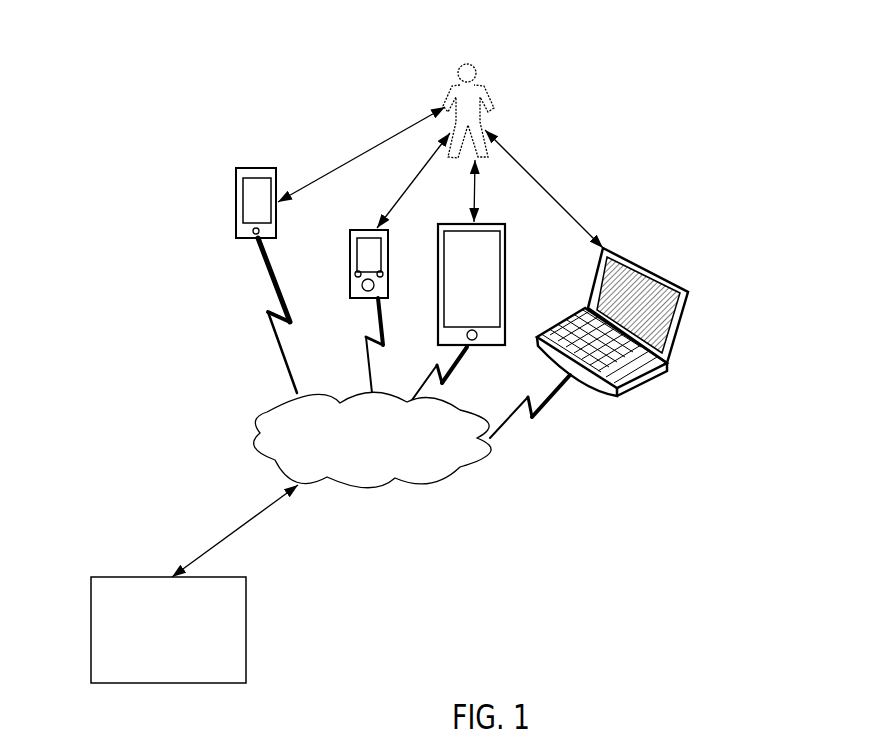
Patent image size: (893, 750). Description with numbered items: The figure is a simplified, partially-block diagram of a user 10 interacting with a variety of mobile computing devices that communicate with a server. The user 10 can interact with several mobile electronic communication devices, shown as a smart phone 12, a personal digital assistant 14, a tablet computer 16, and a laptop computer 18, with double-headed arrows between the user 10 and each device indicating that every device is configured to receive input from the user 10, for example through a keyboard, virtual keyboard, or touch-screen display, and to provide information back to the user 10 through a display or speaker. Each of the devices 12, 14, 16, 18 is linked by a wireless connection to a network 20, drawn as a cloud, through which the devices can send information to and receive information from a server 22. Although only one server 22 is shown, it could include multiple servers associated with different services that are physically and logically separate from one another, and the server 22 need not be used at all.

The user 10 is at (487, 77).
The computing device 12 is at (237, 198).
The computing device 14 is at (358, 300).
The computing device 16 is at (505, 288).
The computing device 18 is at (665, 277).
The network 20 is at (257, 442).
The server 22 is at (132, 352).